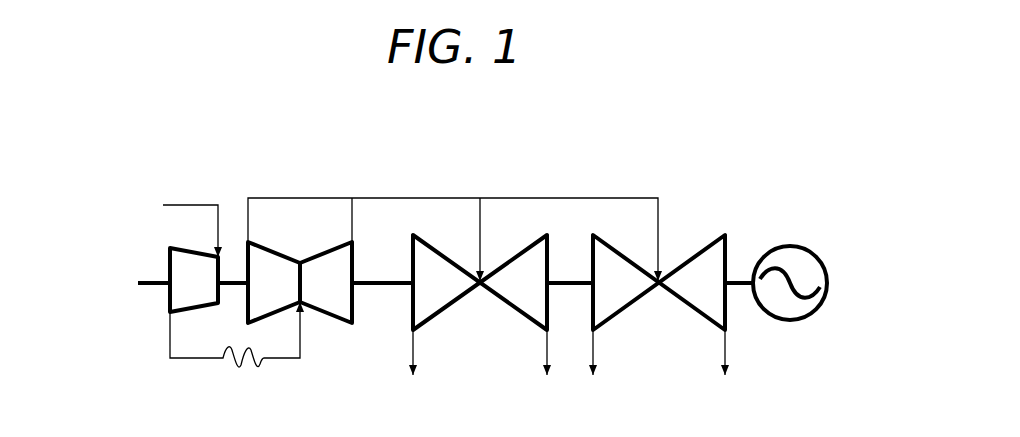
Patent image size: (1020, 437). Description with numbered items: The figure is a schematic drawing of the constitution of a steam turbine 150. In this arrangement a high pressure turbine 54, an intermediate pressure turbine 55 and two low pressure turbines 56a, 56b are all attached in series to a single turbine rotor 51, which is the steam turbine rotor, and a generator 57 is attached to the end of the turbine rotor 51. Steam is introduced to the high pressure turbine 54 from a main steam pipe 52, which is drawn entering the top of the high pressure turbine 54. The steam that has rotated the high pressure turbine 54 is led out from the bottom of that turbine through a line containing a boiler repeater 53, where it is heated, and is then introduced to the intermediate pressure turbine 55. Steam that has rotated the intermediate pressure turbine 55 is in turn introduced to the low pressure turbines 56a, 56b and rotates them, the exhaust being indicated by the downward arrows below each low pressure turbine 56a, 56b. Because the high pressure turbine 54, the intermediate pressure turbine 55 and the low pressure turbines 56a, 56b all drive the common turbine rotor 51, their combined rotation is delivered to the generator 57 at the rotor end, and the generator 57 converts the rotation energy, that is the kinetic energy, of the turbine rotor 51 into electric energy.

The steam turbine 150 is at (545, 182).
The turbine rotor 51 is at (153, 288).
The main steam pipe 52 is at (190, 205).
The boiler repeater 53 is at (250, 367).
The high pressure turbine 54 is at (182, 268).
The intermediate pressure turbine 55 is at (330, 302).
The low pressure turbine 56a is at (440, 300).
The low pressure turbine 56b is at (620, 298).
The generator 57 is at (797, 322).